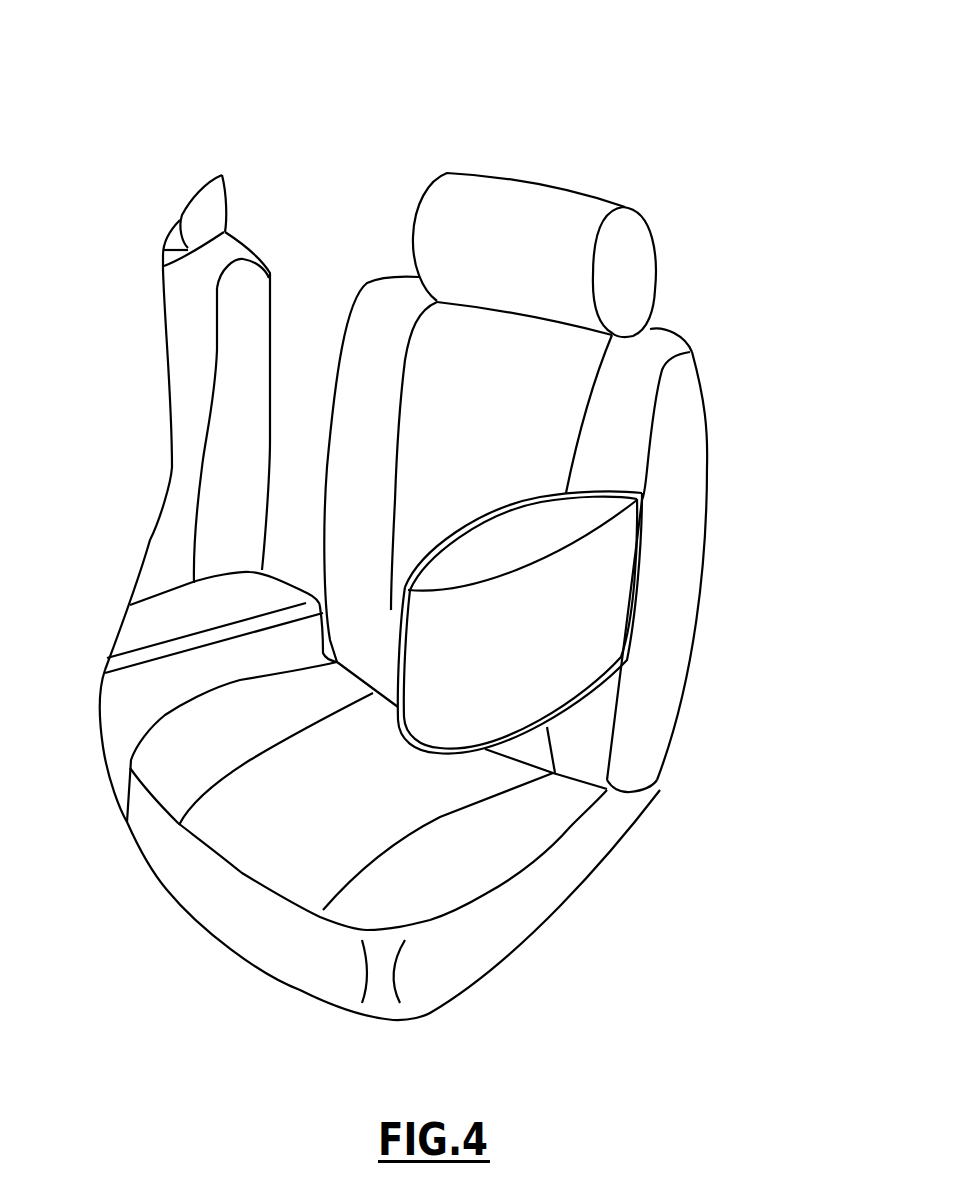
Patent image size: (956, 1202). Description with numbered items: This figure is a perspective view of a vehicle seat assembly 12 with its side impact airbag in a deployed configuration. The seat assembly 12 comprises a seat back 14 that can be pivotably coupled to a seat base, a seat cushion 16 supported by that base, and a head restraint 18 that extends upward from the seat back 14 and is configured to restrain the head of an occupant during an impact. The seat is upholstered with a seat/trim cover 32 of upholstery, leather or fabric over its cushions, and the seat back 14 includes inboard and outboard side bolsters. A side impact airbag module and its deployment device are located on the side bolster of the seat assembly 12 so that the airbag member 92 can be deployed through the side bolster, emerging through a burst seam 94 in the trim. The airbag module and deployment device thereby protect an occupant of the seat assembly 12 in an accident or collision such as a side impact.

The seat assembly 12 is at (370, 95).
The seat back 14 is at (533, 398).
The seat cushion 16 is at (267, 863).
The head restraint 18 is at (548, 207).
The seat/trim cover 32 is at (608, 737).
The airbag member 92 is at (487, 703).
The burst seam 94 is at (660, 546).